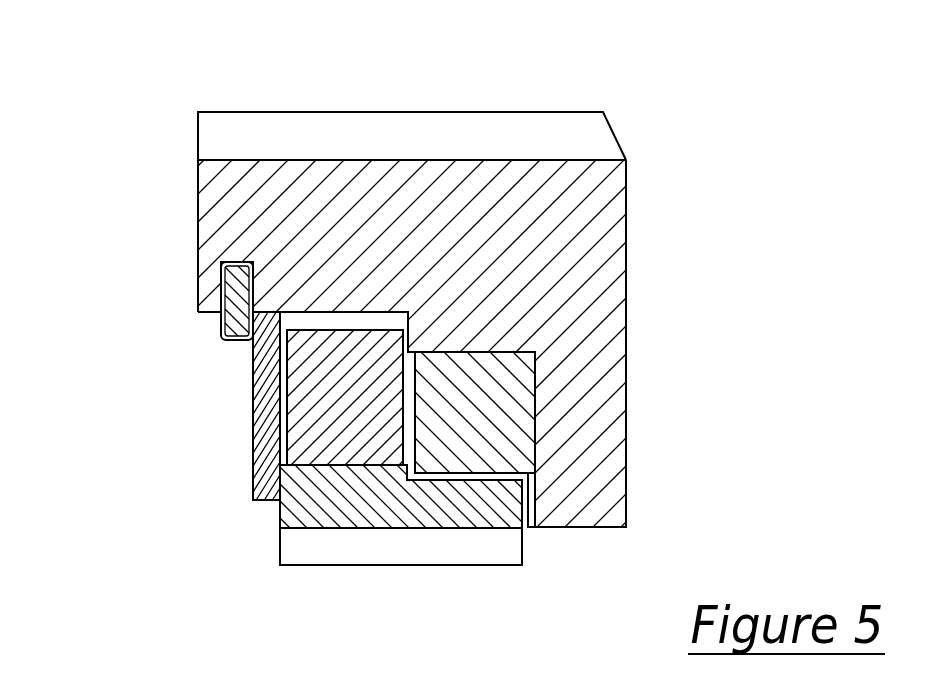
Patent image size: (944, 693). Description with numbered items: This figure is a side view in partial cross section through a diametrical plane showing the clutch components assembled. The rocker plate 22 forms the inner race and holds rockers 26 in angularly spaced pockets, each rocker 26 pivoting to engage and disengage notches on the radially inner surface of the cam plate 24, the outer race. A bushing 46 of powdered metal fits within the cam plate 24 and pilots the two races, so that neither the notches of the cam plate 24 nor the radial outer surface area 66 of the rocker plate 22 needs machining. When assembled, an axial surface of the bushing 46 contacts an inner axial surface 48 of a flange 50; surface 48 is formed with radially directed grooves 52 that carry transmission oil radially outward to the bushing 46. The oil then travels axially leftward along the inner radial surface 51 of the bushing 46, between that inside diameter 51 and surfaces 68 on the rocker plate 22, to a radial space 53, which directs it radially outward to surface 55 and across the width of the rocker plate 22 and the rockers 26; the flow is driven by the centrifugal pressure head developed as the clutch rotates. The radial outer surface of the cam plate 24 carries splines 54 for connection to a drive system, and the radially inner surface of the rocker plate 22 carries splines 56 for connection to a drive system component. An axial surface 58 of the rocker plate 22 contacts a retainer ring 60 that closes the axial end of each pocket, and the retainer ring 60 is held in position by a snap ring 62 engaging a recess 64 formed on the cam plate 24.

The rocker plate 22 is at (308, 503).
The cam plate 24 is at (217, 203).
The rocker 26 is at (283, 457).
The bushing 46 is at (508, 386).
The inner axial surface 48 is at (537, 465).
The flange 50 is at (615, 422).
The inner radial surface 51 is at (492, 475).
The radially directed grooves 52 is at (537, 490).
The radial space 53 is at (407, 415).
The splines 54 is at (542, 125).
The surface 55 is at (315, 322).
The splines 56 is at (447, 552).
The axial surface 58 is at (280, 548).
The retainer ring 60 is at (260, 417).
The snap ring 62 is at (232, 340).
The recess 64 is at (237, 318).
The radial outer surface area 66 is at (330, 465).
The surfaces 68 is at (443, 467).